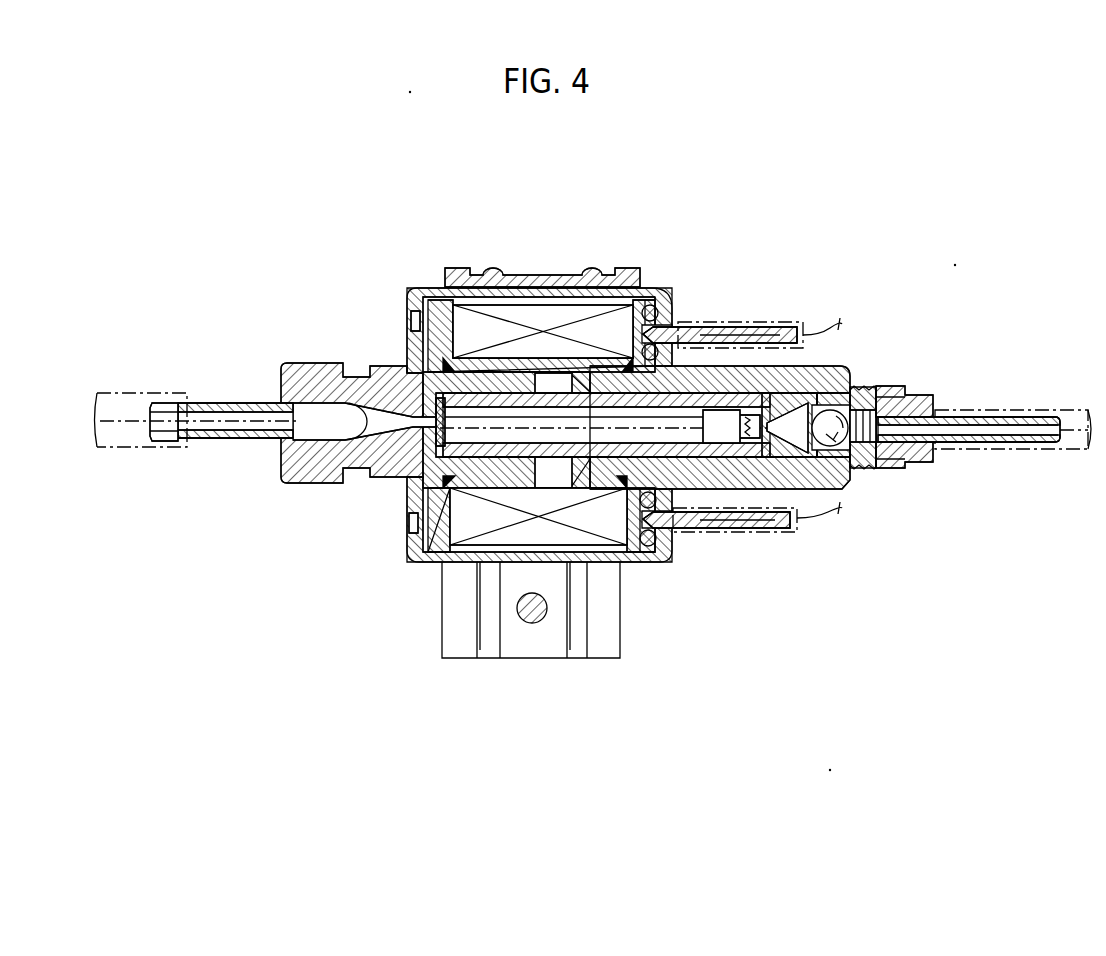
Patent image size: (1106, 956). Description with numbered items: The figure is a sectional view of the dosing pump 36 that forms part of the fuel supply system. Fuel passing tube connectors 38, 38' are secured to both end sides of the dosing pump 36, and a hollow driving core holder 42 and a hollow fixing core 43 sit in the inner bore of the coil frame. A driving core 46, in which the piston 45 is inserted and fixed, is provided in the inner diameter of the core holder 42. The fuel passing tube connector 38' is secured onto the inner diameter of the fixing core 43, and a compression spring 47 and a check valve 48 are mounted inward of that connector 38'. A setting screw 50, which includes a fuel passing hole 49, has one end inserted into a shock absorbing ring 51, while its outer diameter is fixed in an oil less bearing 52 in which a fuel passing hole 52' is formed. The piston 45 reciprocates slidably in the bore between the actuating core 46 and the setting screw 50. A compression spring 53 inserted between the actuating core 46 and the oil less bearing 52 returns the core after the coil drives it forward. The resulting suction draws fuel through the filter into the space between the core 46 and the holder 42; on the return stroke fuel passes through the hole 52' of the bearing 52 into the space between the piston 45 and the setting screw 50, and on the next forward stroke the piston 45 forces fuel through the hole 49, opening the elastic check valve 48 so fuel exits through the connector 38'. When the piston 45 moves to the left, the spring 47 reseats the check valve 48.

The dosing pump 36 is at (533, 262).
The fuel passing tube connector 38 is at (221, 357).
The fuel passing tube connector 38' is at (969, 383).
The driving core holder 42 is at (390, 500).
The fixing core 43 is at (807, 393).
The piston 45 is at (670, 430).
The driving core 46 is at (590, 568).
The compression spring 47 is at (862, 400).
The check valve 48 is at (845, 482).
The fuel passing hole 49 is at (858, 395).
The setting screw 50 is at (898, 385).
The shock absorbing ring 51 is at (790, 528).
The oil less bearing 52 is at (760, 509).
The fuel passing hole 52' is at (773, 348).
The compression spring 53 is at (663, 293).